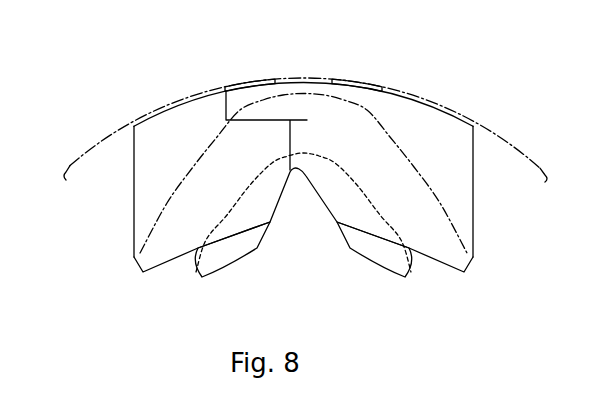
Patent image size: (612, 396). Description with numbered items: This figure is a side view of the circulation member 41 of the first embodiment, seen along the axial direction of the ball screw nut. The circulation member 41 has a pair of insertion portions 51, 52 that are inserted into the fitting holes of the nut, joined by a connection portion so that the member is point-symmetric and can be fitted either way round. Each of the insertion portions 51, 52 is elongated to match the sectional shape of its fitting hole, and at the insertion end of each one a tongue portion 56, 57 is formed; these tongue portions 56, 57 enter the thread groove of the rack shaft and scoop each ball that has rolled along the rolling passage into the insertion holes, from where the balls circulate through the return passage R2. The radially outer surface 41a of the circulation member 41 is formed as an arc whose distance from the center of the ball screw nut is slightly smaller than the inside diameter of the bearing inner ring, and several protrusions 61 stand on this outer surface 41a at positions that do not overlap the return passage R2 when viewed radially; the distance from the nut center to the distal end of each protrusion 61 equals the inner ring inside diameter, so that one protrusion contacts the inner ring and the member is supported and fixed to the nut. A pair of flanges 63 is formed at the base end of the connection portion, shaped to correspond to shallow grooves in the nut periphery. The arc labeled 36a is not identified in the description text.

The inner surface of windshield 36a is at (100, 146).
The circulation member 41 is at (506, 67).
The outer surface 41a is at (441, 110).
The insertion portion 51 is at (473, 203).
The insertion portion 52 is at (134, 204).
The tongue portion 56 is at (405, 278).
The tongue portion 57 is at (202, 278).
The protrusions 61 is at (240, 87).
The flanges 63 is at (226, 112).
The return passage R2 is at (314, 94).